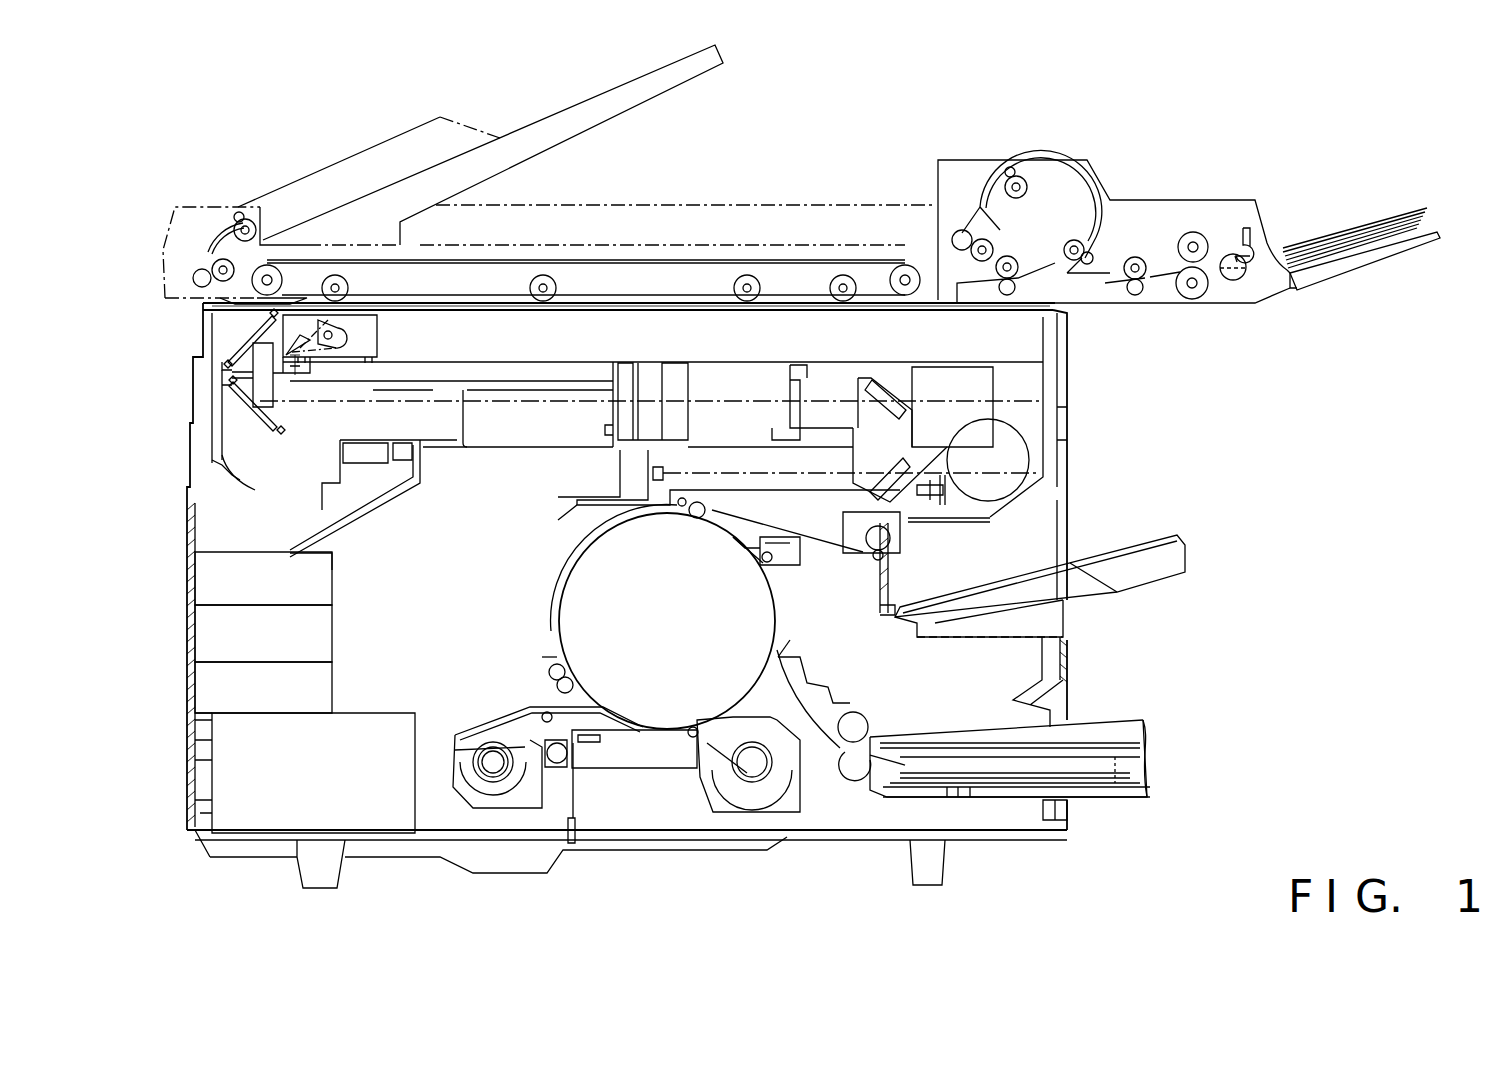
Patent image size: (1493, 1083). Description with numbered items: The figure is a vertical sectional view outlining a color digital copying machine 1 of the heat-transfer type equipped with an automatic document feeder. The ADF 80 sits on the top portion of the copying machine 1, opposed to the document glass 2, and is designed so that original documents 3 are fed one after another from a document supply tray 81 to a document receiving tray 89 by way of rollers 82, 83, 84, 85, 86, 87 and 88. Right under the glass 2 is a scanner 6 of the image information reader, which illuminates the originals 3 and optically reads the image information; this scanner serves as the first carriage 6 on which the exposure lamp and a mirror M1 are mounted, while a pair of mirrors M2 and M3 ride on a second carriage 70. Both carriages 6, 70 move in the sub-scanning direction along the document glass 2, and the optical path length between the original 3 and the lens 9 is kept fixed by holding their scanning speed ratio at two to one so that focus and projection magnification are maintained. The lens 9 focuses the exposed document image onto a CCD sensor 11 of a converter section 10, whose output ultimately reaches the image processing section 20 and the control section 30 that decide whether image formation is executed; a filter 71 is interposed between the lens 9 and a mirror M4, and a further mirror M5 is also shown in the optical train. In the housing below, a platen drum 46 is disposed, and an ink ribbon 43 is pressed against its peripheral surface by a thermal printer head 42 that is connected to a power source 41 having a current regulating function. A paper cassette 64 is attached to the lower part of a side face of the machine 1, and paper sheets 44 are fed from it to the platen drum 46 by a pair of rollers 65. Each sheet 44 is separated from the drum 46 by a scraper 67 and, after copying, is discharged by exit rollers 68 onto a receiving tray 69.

The color digital copying machine 1 is at (165, 482).
The document glass 2 is at (610, 305).
The original documents 3 is at (1380, 224).
The scanner 6 is at (378, 327).
The lens 9 is at (655, 365).
The converter section 10 is at (333, 575).
The CCD sensor 11 is at (653, 473).
The image processing section 20 is at (333, 631).
The control section 30 is at (333, 683).
The power source 41 is at (402, 715).
The thermal printer head 42 is at (645, 730).
The ink ribbon 43 is at (515, 715).
The paper sheets 44 is at (1150, 750).
The platen drum 46 is at (778, 600).
The paper cassette 64 is at (1122, 727).
The pair of rollers 65 is at (858, 712).
The scraper 67 is at (742, 545).
The exit rollers 68 is at (895, 545).
The receiving tray 69 is at (1153, 545).
The second carriage 70 is at (222, 390).
The filter 71 is at (803, 390).
The ADF 80 is at (893, 128).
The document supply tray 81 is at (1397, 250).
The roller 82 is at (1262, 236).
The roller 83 is at (1193, 232).
The roller 84 is at (1133, 257).
The roller 85 is at (1010, 167).
The roller 86 is at (283, 272).
The roller 87 is at (543, 275).
The roller 88 is at (236, 224).
The document receiving tray 89 is at (578, 105).
The mirror M1 is at (298, 370).
The mirror M2 is at (240, 340).
The mirror M3 is at (246, 398).
The mirror M4 is at (895, 400).
The fifth mirror M5 is at (898, 448).